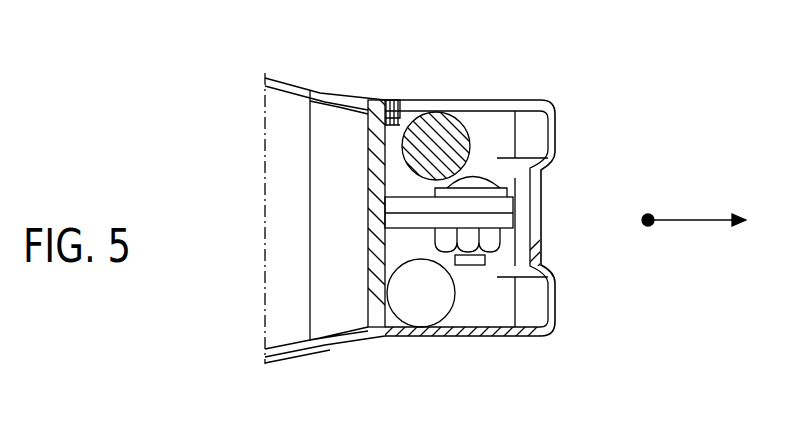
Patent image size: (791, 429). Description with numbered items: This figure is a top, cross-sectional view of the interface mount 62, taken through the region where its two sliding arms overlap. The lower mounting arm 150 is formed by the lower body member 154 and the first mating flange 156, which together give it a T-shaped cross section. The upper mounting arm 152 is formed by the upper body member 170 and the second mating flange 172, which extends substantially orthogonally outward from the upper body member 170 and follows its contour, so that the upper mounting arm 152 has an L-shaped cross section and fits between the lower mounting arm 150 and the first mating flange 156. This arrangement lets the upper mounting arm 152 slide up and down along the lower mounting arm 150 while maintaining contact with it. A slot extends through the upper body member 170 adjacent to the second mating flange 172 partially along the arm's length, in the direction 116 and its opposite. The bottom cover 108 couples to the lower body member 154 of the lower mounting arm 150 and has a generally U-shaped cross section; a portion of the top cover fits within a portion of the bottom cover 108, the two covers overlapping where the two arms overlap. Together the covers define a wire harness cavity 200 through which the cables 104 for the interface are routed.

The interface mount 62 is at (178, 110).
The cables 104 is at (440, 130).
The bottom cover 108 is at (557, 123).
The direction 116 is at (690, 220).
The lower mounting arm 150 is at (368, 131).
The upper mounting arm 152 is at (398, 118).
The lower body member 154 is at (375, 262).
The first mating flange 156 is at (497, 218).
The upper body member 170 is at (390, 115).
The second mating flange 172 is at (495, 207).
The wire harness cavity 200 is at (397, 242).